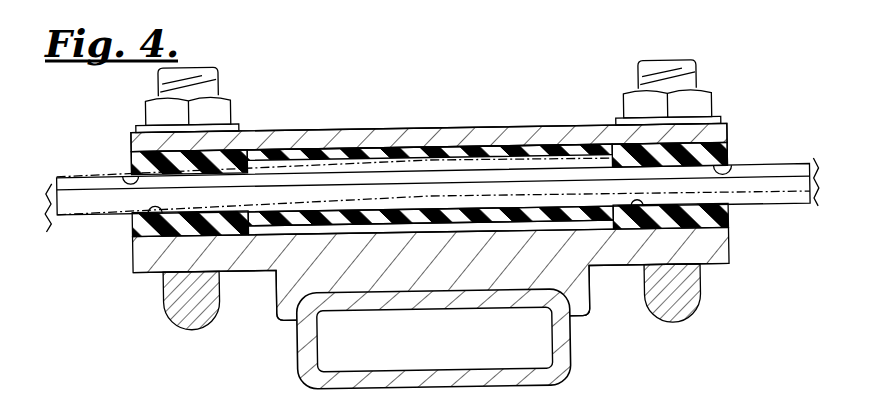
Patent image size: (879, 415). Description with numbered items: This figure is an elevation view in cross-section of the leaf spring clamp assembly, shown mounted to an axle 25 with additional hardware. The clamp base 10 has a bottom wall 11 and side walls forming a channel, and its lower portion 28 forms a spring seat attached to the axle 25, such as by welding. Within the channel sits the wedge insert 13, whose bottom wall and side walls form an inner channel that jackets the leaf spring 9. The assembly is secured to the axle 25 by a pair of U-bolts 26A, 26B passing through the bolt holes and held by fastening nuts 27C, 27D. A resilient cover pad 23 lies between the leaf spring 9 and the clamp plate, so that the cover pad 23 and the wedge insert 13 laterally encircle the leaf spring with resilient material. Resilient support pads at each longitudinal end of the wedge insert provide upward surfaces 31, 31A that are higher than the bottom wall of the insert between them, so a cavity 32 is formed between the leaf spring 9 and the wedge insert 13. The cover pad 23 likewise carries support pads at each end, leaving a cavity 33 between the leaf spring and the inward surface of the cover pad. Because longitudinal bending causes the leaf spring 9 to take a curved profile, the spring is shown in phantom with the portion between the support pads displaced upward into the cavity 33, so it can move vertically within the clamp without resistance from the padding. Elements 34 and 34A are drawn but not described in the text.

The leaf spring 9 is at (780, 167).
The clamp base 10 is at (733, 259).
The bottom wall 11 is at (332, 226).
The wedge insert 13 is at (148, 211).
The resilient cover pad 23 is at (458, 150).
The axle 25 is at (296, 347).
The U-bolt 26A is at (165, 76).
The U-bolt 26B is at (697, 67).
The fastening nut 27C is at (236, 105).
The fastening nut 27D is at (710, 102).
The lower portion of the clamp base 28 is at (578, 301).
The upward surface 31 is at (626, 237).
The upward surface 31A is at (138, 217).
The cavity 32 is at (425, 215).
The cavity 33 is at (285, 144).
The upper right bead on rod 34 is at (728, 170).
The upper left bead on rod 34A is at (132, 173).